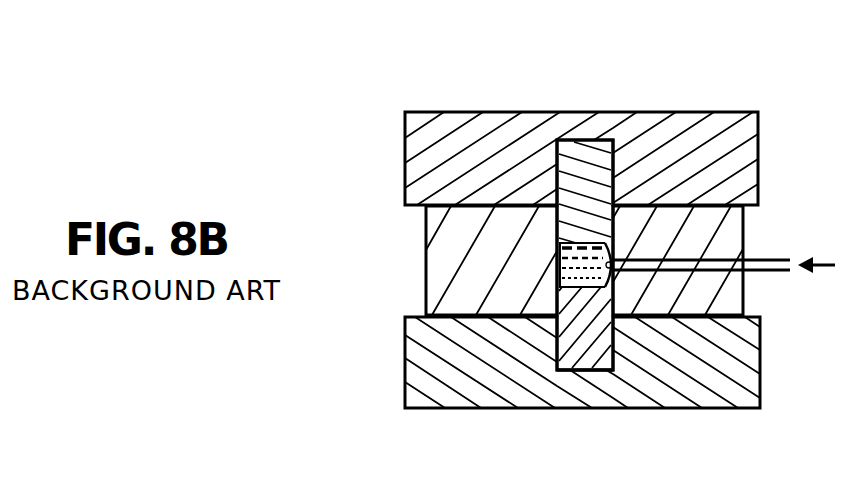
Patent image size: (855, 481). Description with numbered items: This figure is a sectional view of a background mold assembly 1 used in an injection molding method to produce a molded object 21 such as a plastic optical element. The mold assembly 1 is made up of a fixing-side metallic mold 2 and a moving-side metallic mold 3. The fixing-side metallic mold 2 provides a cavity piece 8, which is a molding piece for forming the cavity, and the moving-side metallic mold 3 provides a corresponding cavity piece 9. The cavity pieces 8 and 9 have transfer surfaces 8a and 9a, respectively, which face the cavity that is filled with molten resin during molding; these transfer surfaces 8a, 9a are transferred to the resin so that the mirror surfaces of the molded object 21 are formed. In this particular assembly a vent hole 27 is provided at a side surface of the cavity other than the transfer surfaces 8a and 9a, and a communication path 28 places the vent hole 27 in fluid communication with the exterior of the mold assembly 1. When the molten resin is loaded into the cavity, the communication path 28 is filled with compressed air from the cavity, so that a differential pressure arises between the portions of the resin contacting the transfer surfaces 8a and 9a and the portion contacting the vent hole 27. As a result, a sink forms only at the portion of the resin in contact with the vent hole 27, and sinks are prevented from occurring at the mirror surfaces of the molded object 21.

The mold assembly 1 is at (401, 107).
The fixing-side metallic mold 2 is at (415, 165).
The moving-side metallic mold 3 is at (422, 385).
The cavity piece 8 is at (570, 145).
The transfer surface 8a is at (580, 243).
The cavity piece 9 is at (600, 372).
The transfer surface 9a is at (563, 290).
The molded object 21 is at (614, 298).
The vent hole 27 is at (616, 258).
The communication path 28 is at (750, 271).